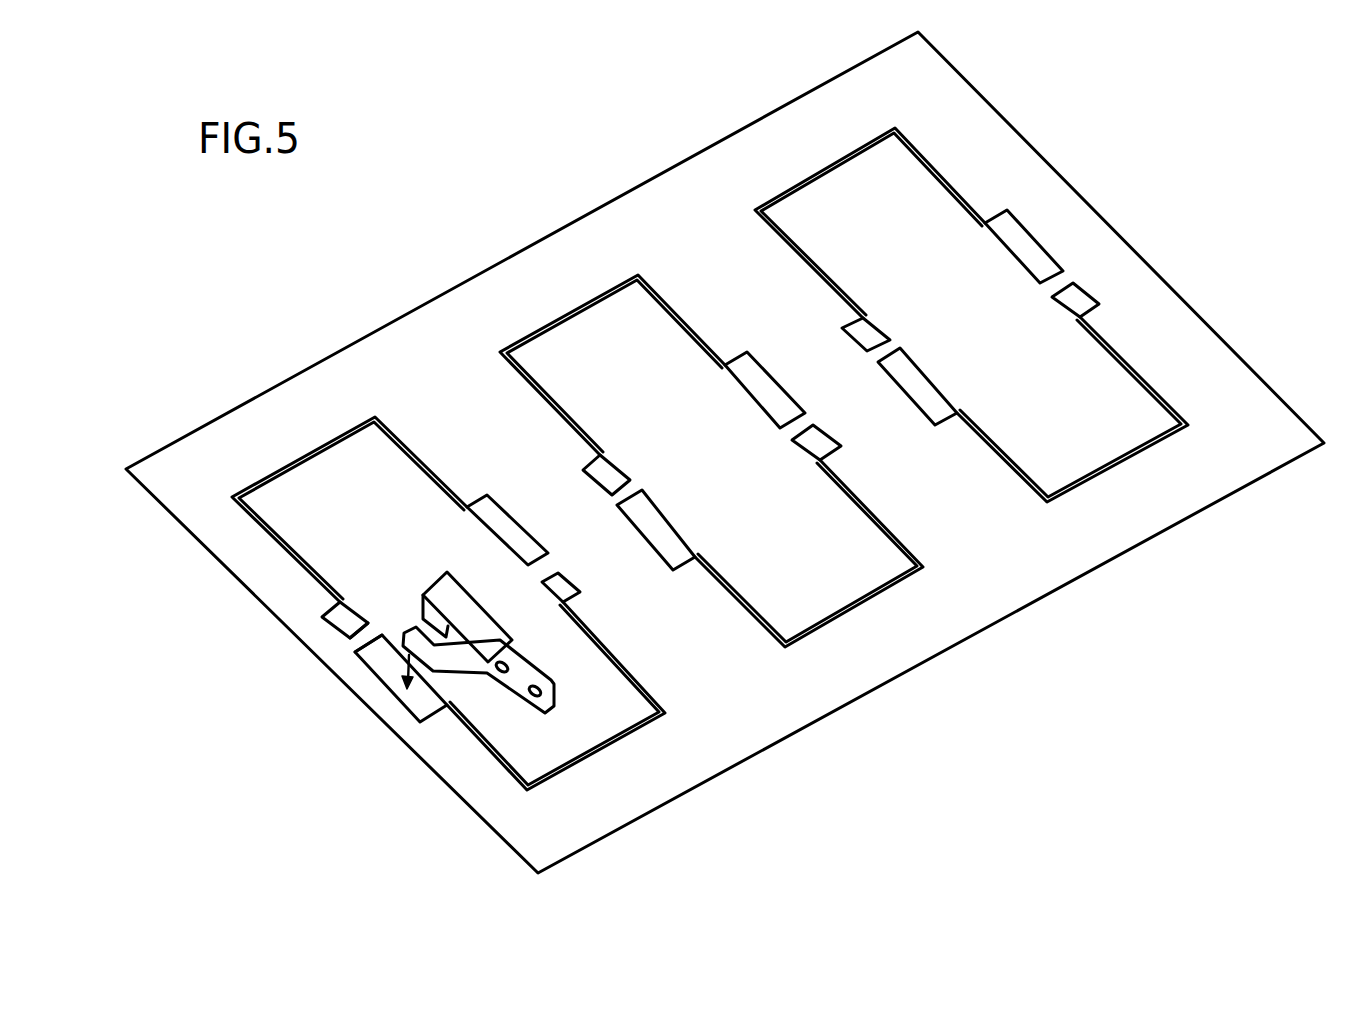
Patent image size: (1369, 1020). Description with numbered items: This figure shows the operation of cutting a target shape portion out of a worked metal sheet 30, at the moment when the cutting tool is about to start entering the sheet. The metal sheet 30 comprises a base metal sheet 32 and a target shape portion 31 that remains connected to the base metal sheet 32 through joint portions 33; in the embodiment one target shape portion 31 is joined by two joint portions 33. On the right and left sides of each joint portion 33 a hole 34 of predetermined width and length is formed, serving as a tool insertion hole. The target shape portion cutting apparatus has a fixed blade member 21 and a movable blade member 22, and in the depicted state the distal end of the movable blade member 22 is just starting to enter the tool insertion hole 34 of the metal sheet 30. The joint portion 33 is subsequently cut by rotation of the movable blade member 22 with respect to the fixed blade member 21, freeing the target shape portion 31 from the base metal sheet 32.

The fixed blade member 21 is at (485, 627).
The movable blade member 22 is at (513, 692).
The metal sheet 30 is at (725, 452).
The target shape portion 31 is at (310, 475).
The base metal sheet 32 is at (483, 300).
The joint portion 33 is at (353, 641).
The hole 34 is at (328, 617).